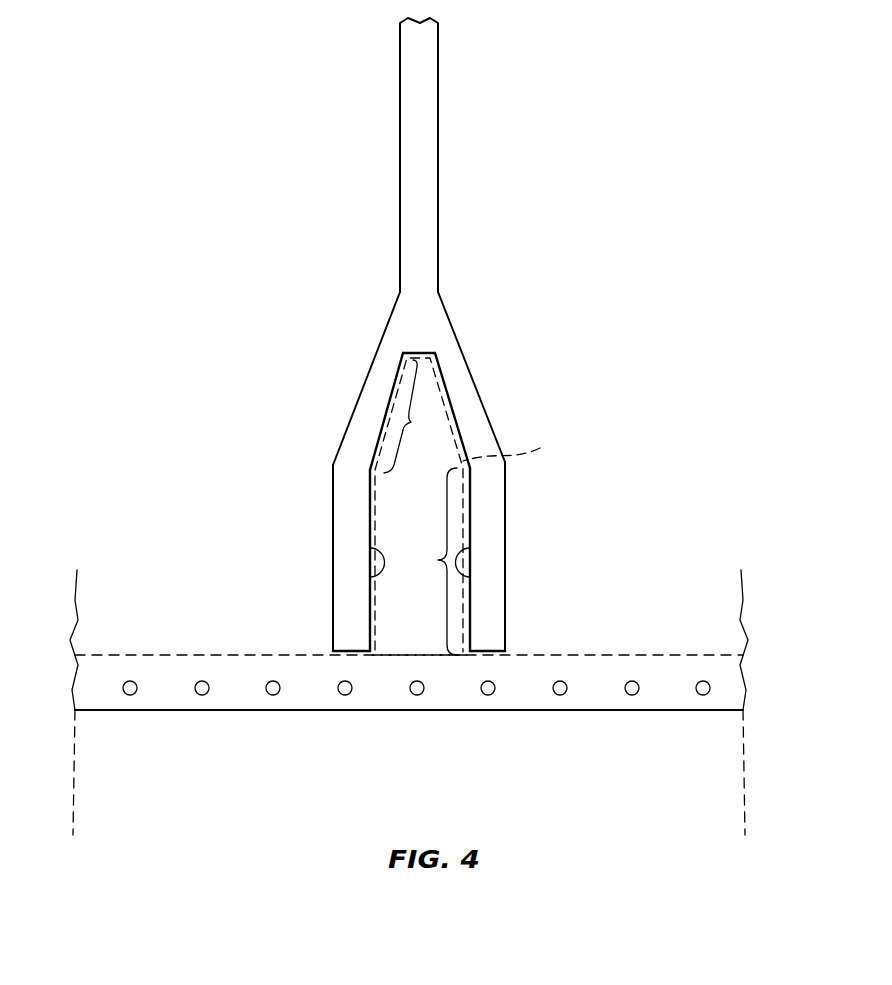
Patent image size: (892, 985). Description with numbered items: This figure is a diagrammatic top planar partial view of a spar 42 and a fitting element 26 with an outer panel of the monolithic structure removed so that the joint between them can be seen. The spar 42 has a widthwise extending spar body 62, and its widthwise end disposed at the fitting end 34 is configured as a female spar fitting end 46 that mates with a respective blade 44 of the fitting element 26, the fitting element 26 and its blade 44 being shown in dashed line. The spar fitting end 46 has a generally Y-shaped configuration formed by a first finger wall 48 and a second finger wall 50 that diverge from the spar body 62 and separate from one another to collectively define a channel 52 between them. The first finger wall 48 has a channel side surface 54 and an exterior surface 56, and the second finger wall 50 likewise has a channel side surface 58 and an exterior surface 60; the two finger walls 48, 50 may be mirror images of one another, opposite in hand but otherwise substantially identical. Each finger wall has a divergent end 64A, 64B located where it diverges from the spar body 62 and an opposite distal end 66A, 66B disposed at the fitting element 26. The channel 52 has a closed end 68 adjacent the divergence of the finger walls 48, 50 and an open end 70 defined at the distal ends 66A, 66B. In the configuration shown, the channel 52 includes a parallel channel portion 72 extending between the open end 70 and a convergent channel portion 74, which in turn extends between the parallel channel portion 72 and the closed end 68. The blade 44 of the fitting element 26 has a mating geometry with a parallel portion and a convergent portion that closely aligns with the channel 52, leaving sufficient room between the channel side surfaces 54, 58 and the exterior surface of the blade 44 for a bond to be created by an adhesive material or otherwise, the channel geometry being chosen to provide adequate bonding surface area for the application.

The spar 42 is at (470, 188).
The spar body 62 is at (425, 235).
The spar fitting end 46 is at (312, 444).
The divergent end of first finger wall 64A is at (388, 376).
The divergent end of second finger wall 64B is at (453, 368).
The closed end of channel 68 is at (418, 358).
The first finger wall 48 is at (350, 498).
The second finger wall 50 is at (487, 500).
The channel 52 is at (440, 463).
The blade 44 is at (519, 442).
The convergent channel portion 74 is at (418, 416).
The parallel channel portion 72 is at (436, 561).
The channel side surface of first finger wall 54 is at (370, 577).
The channel side surface of second finger wall 58 is at (470, 577).
The exterior surface of first finger wall 56 is at (333, 622).
The exterior surface of second finger wall 60 is at (505, 622).
The fitting element 26 is at (240, 657).
The fitting end 34 is at (632, 712).
The distal end of first finger wall 66A is at (337, 655).
The distal end of second finger wall 66B is at (497, 653).
The open end of channel 70 is at (432, 650).